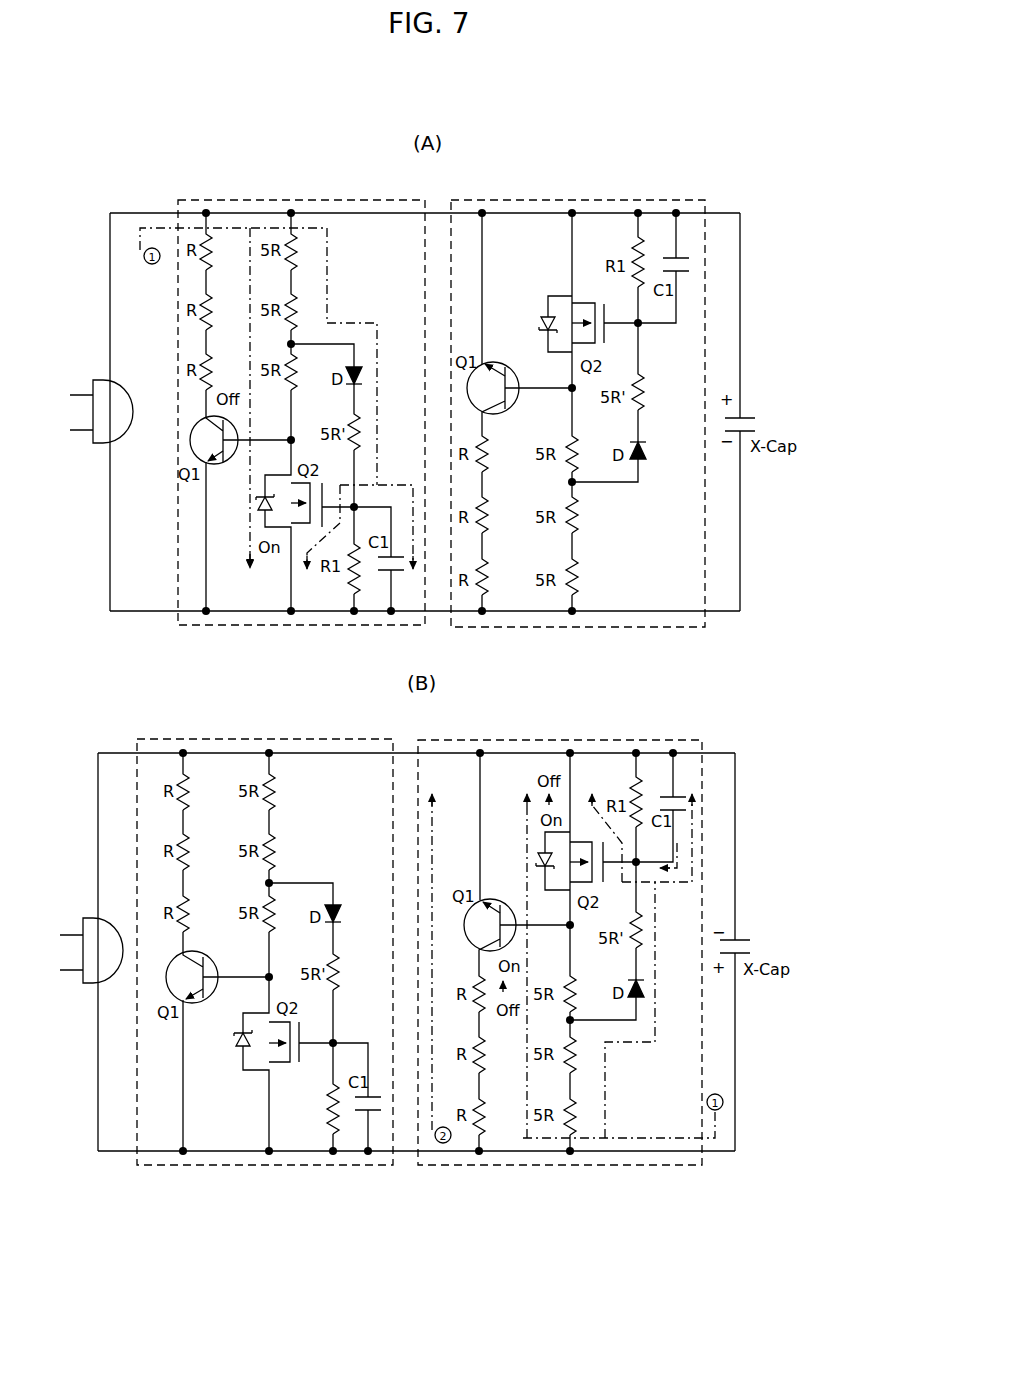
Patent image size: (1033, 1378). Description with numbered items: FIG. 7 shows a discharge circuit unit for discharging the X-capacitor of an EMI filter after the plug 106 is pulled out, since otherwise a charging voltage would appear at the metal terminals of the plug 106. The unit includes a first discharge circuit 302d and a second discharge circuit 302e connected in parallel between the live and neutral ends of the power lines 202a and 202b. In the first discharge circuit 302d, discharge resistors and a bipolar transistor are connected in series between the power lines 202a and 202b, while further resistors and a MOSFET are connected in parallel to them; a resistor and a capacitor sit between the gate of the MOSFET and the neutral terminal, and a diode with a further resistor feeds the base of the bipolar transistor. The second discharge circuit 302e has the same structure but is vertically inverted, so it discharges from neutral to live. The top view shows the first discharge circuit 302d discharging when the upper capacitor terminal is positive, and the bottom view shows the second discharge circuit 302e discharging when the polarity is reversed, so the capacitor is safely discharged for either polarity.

The power line 202a is at (143, 213).
The power line 202b is at (127, 613).
The plug 106 is at (115, 397).
The first discharge circuit 302d is at (290, 200).
The second discharge circuit 302e is at (577, 200).